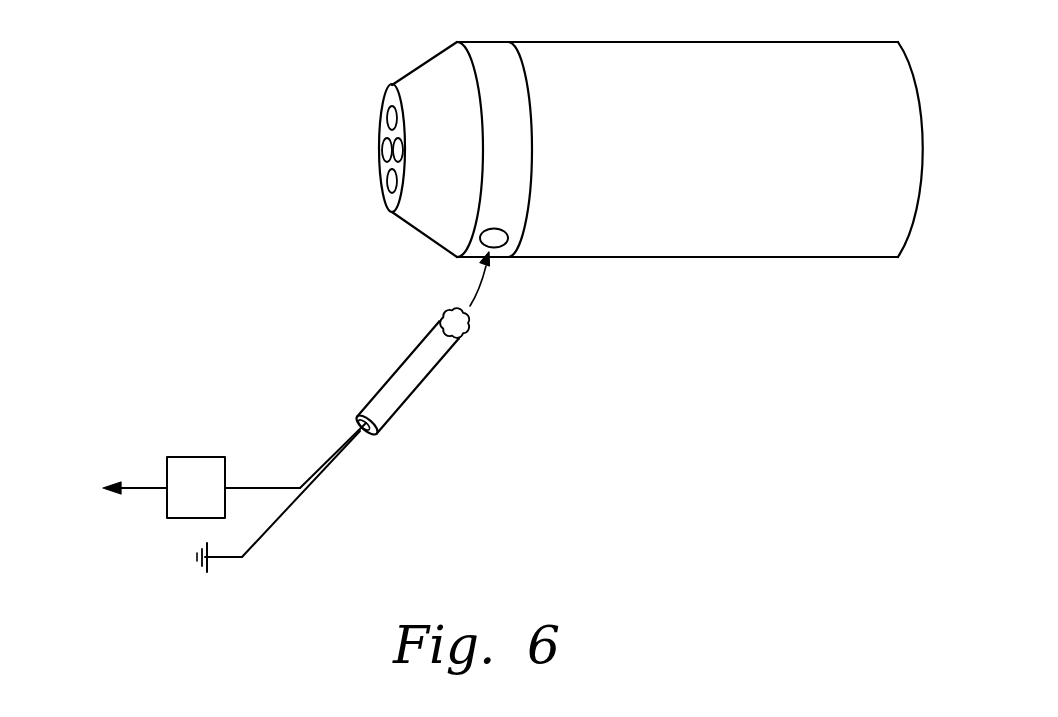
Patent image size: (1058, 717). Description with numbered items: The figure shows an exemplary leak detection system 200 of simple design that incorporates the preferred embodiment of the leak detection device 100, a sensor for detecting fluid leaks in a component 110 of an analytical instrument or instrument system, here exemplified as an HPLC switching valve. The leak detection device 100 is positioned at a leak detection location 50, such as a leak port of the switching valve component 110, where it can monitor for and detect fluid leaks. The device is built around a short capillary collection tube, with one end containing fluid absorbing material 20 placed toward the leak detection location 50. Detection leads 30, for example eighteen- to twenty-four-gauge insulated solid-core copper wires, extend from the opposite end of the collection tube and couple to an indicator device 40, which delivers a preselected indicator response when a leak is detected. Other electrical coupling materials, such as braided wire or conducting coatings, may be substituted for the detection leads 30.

The leak detection system 200 is at (520, 167).
The component 110 is at (737, 172).
The leak detection location 50 is at (479, 254).
The fluid absorbing material 20 is at (472, 322).
The leak detection device 100 is at (457, 383).
The detection leads 30 is at (337, 447).
The indicator device 40 is at (221, 503).